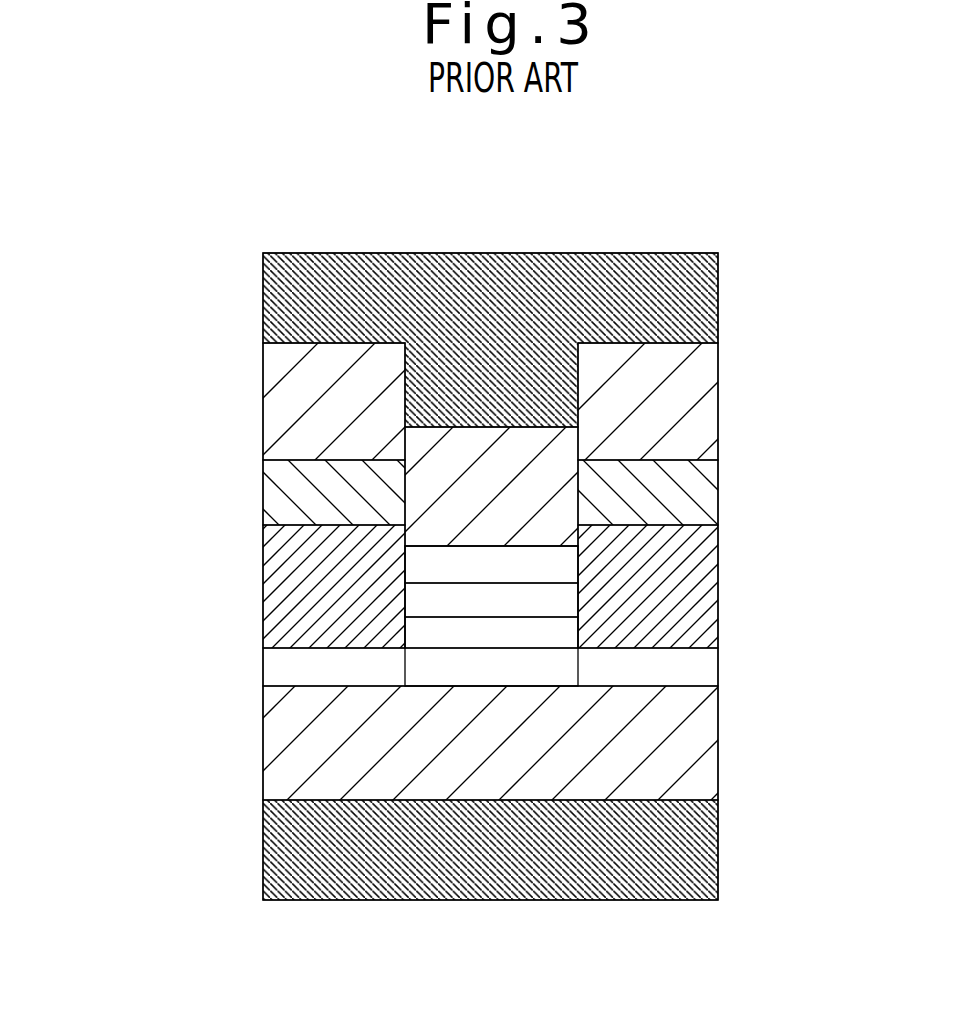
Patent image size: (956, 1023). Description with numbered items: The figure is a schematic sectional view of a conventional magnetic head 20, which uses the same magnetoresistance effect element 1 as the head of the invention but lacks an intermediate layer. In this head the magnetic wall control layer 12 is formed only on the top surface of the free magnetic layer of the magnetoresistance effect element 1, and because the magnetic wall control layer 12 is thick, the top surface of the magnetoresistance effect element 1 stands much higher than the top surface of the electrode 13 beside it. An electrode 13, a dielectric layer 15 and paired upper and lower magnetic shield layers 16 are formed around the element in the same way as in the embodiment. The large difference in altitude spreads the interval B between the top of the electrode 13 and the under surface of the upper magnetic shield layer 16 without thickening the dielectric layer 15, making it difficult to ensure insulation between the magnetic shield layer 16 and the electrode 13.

The conventional magnetic head 20 is at (698, 220).
The magnetic shield layer 16 is at (287, 295).
The dielectric layer 15 is at (282, 413).
The electrode 13 is at (698, 479).
The magnetic wall control layer 12 is at (652, 630).
The magnetoresistance effect element 1 is at (808, 485).
The interval B is at (404, 428).